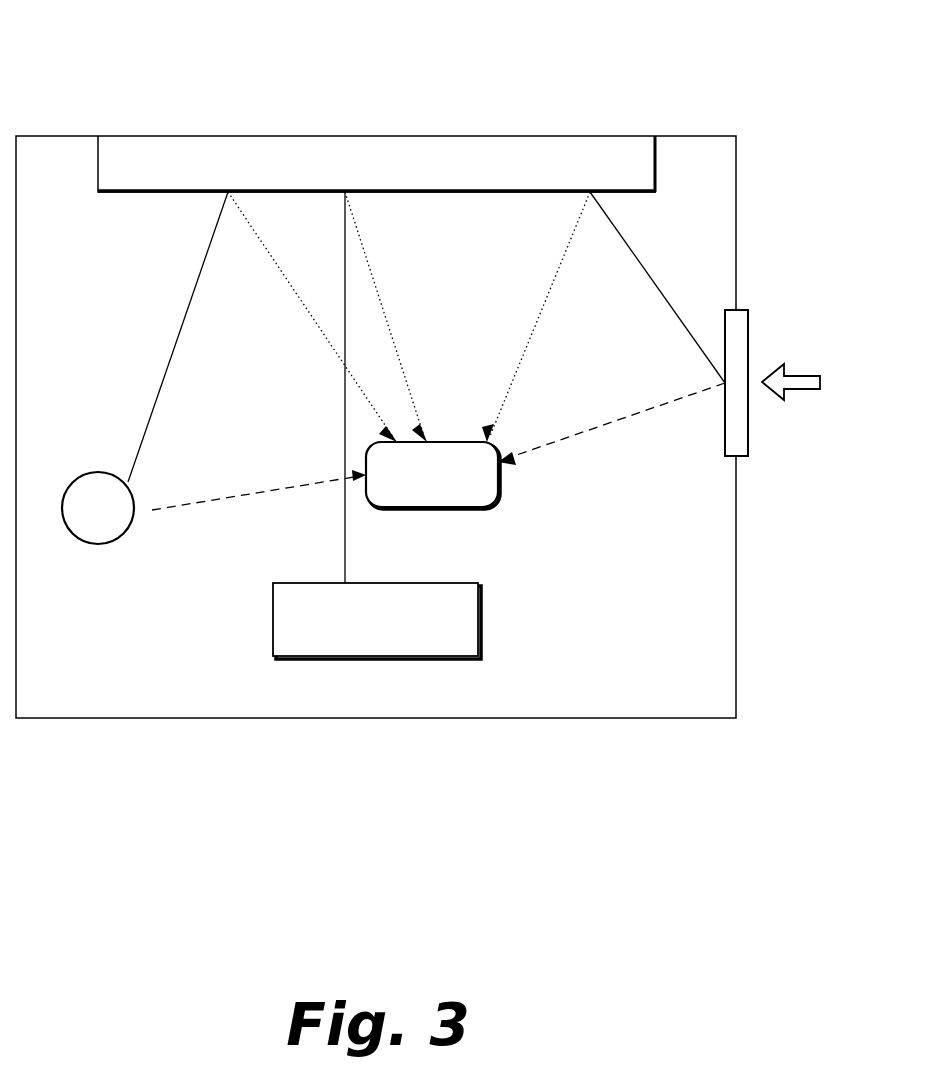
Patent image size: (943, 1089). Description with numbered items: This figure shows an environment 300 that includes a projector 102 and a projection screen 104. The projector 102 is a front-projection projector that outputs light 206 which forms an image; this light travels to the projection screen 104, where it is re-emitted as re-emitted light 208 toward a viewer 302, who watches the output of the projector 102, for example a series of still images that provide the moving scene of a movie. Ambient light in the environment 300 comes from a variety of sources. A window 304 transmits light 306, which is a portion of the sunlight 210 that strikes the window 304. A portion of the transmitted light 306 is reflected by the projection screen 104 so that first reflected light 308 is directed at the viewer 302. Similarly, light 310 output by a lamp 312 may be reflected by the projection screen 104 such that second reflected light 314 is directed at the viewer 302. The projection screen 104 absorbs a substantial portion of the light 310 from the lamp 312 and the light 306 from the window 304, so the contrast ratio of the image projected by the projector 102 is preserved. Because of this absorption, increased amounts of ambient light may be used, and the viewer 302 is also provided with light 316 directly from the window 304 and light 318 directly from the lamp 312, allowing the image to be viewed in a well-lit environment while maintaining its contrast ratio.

The environment 300 is at (152, 58).
The projection screen 104 is at (377, 164).
The projector 102 is at (377, 621).
The viewer 302 is at (433, 475).
The window 304 is at (746, 311).
The sunlight 210 is at (790, 376).
The lamp 312 is at (98, 508).
The light 206 is at (345, 547).
The re-emitted light 208 is at (384, 299).
The light 306 is at (702, 355).
The first reflected light 308 is at (559, 259).
The light 310 is at (182, 327).
The second reflected light 314 is at (257, 233).
The light 316 is at (673, 404).
The light 318 is at (318, 482).